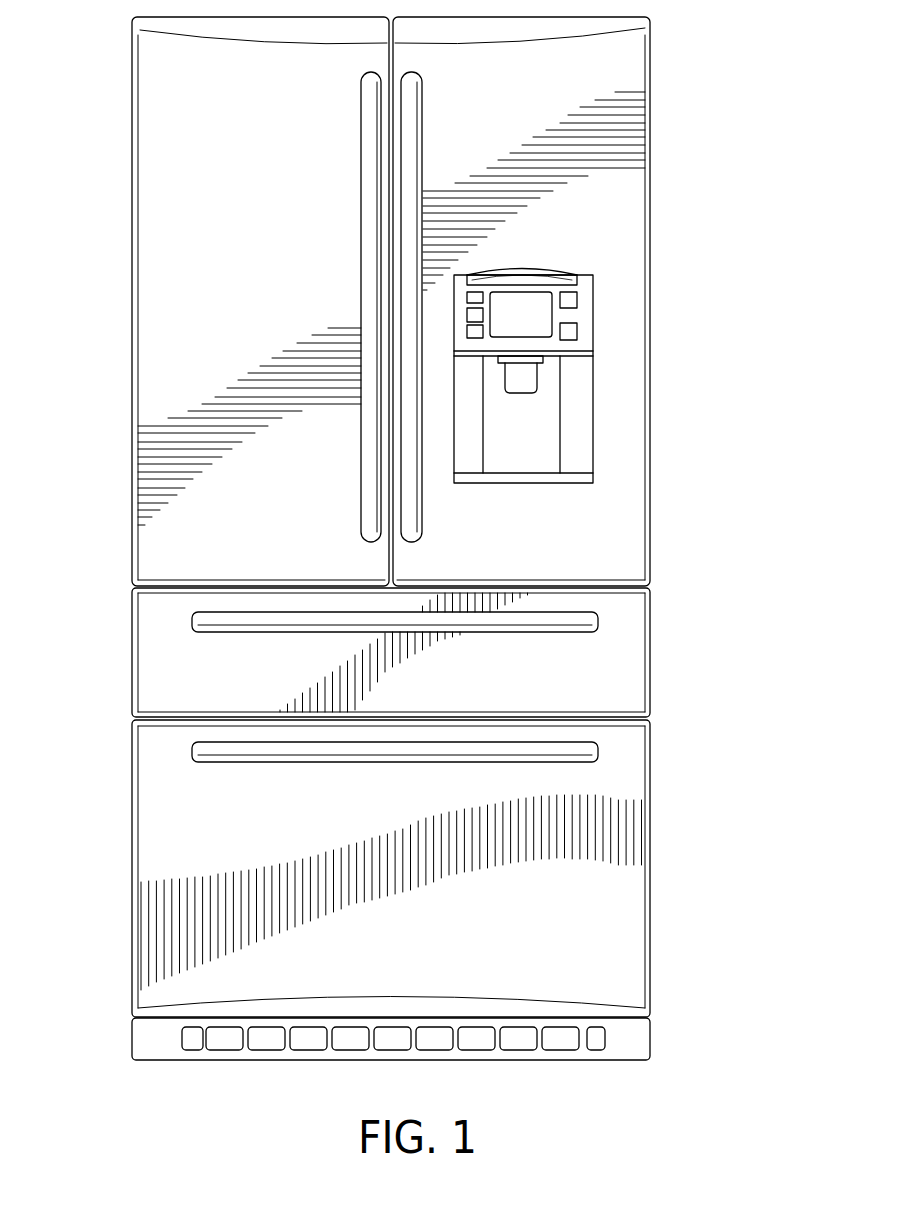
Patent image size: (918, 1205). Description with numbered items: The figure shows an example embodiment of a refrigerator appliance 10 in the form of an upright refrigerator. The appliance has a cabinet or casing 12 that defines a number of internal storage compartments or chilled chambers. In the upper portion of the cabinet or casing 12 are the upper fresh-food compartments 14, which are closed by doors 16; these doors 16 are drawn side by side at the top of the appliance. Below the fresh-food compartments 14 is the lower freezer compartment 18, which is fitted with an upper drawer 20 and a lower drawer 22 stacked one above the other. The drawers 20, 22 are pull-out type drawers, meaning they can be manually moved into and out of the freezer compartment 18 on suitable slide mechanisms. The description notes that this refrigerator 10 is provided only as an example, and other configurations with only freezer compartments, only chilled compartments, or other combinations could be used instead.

The refrigerator appliance 10 is at (423, 538).
The cabinet or casing 12 is at (652, 500).
The upper fresh-food compartments 14 is at (168, 216).
The doors 16 is at (294, 499).
The lower freezer compartment 18 is at (430, 652).
The upper drawer 20 is at (237, 684).
The lower drawer 22 is at (498, 947).